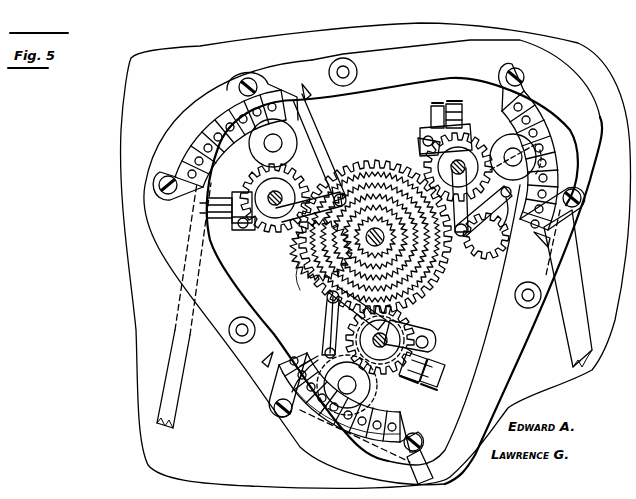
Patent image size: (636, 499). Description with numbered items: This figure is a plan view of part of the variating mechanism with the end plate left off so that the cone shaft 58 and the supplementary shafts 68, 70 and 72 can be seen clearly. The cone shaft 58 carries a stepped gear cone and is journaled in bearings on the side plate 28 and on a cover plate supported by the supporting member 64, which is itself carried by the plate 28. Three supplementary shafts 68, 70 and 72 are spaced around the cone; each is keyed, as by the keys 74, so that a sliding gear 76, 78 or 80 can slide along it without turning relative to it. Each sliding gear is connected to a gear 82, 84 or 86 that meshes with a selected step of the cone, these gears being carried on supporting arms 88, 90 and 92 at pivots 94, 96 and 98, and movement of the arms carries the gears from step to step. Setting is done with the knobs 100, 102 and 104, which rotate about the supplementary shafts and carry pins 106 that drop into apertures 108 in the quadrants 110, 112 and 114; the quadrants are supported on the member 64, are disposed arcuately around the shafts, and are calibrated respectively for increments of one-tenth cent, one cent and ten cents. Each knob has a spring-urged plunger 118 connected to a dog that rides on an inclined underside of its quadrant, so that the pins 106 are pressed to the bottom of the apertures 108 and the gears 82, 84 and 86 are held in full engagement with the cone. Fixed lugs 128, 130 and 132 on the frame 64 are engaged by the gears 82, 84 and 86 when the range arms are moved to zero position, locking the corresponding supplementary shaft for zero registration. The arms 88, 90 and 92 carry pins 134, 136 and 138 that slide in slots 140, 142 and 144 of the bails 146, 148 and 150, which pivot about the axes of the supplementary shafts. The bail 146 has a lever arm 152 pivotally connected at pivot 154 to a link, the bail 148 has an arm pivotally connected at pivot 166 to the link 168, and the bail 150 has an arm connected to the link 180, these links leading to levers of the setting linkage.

The side member plate 28 is at (580, 60).
The supporting member 64 is at (461, 43).
The plunger 118 is at (282, 138).
The knob 102 is at (504, 140).
The aperture 108 is at (205, 117).
The pin 106 is at (271, 103).
The quadrant 114 is at (197, 140).
The quadrant 112 is at (506, 110).
The quadrant 110 is at (282, 388).
The knob 100 is at (370, 432).
The gear 84 is at (445, 284).
The cone shaft 58 is at (373, 232).
The pivot 98 is at (377, 215).
The supporting arm 92 is at (340, 190).
The gear 86 is at (358, 203).
The supplementary shaft 72 is at (262, 218).
The sliding gear 80 is at (292, 240).
The supplementary shaft 70 is at (436, 160).
The sliding gear 78 is at (430, 132).
The pin 136 is at (452, 104).
The slot 142 is at (438, 106).
The bail 148 is at (432, 106).
The key 74 is at (333, 193).
The supplementary shaft 68 is at (405, 338).
The sliding gear 76 is at (400, 326).
The pin 134 is at (430, 365).
The slot 140 is at (430, 385).
The bail 146 is at (443, 377).
The pin 138 is at (212, 205).
The slot 144 is at (212, 213).
The bail 150 is at (236, 224).
The pivot 96 is at (482, 247).
The supporting arm 90 is at (500, 213).
The gear 82 is at (304, 278).
The pivot 94 is at (327, 297).
The supporting arm 88 is at (318, 340).
The pivot 154 is at (322, 360).
The lever arm 152 is at (372, 385).
The knob 104 is at (302, 117).
The fixed lug 132 is at (304, 85).
The fixed lug 130 is at (550, 238).
The fixed lug 128 is at (262, 364).
The link 168 is at (571, 292).
The link 180 is at (182, 305).
The pivot 166 is at (400, 462).